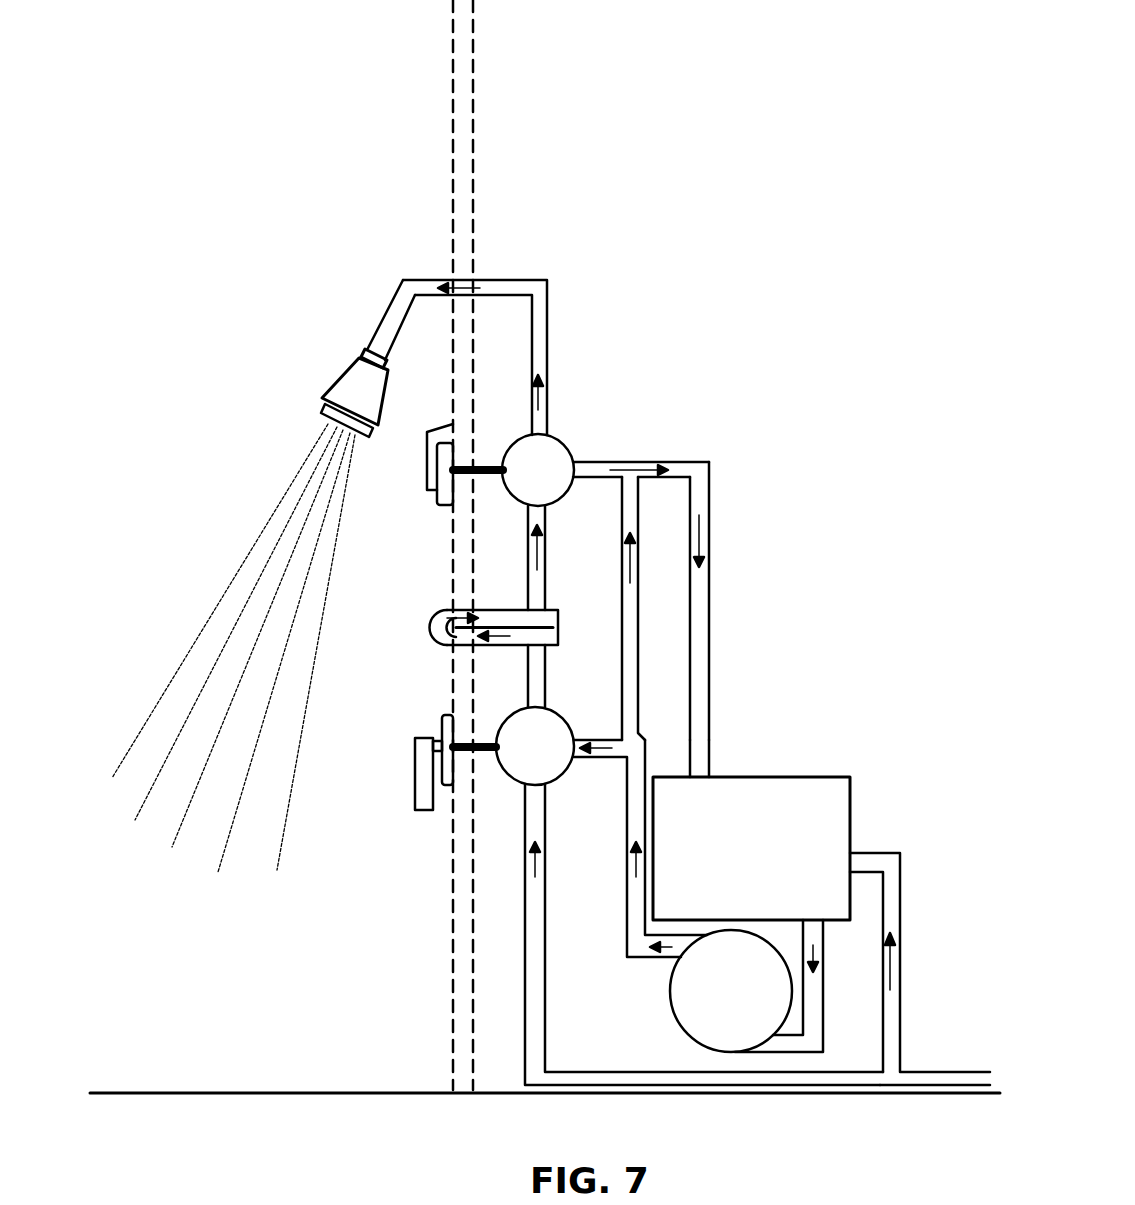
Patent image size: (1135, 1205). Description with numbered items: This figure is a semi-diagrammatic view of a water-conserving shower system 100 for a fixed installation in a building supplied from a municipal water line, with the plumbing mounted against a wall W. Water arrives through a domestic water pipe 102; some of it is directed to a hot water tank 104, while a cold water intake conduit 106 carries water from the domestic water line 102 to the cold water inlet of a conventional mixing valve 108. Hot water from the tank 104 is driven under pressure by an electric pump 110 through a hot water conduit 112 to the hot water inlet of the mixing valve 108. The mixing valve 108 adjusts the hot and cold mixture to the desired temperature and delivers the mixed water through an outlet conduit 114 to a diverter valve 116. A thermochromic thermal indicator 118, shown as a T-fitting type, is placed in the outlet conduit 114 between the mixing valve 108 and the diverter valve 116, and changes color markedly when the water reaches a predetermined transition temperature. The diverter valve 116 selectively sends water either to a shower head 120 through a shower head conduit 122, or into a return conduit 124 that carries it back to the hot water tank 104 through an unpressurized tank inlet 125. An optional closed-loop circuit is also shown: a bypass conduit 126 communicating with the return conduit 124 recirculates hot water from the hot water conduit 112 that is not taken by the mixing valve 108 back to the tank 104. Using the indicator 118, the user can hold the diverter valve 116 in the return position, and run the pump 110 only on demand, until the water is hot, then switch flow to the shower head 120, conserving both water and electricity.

The wall W is at (475, 107).
The shower system 100 is at (786, 203).
The domestic water pipe 102 is at (944, 1072).
The hot water tank 104 is at (800, 776).
The cold water intake conduit 106 is at (545, 983).
The mixing valve 108 is at (563, 770).
The electric pump 110 is at (672, 1015).
The hot water conduit 112 is at (627, 900).
The outlet conduit 114 is at (527, 662).
The diverter valve 116 is at (568, 451).
The thermochromic thermal indicator 118 is at (437, 610).
The shower head 120 is at (338, 383).
The shower head conduit 122 is at (518, 280).
The return conduit 124 is at (709, 685).
The unpressurized tank inlet 125 is at (708, 772).
The bypass conduit 126 is at (621, 694).